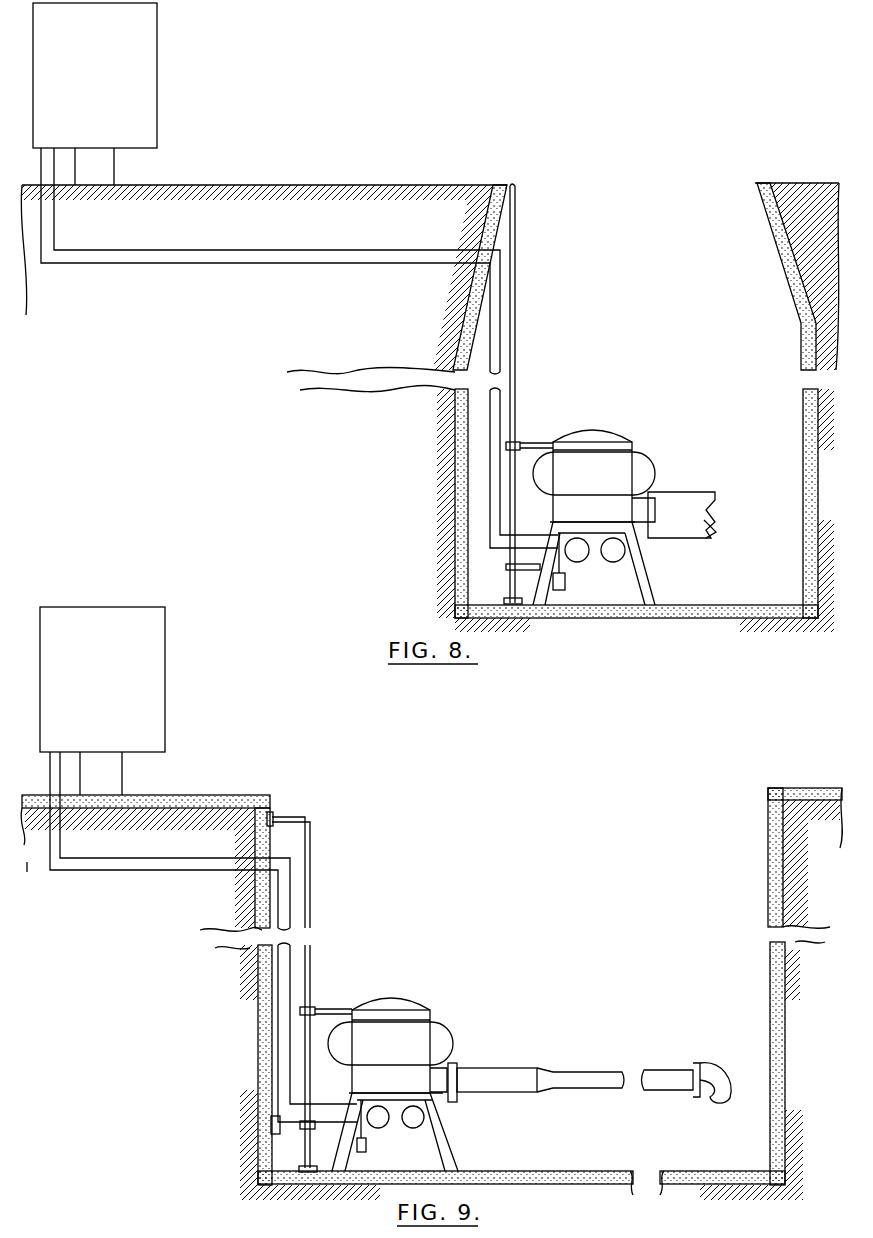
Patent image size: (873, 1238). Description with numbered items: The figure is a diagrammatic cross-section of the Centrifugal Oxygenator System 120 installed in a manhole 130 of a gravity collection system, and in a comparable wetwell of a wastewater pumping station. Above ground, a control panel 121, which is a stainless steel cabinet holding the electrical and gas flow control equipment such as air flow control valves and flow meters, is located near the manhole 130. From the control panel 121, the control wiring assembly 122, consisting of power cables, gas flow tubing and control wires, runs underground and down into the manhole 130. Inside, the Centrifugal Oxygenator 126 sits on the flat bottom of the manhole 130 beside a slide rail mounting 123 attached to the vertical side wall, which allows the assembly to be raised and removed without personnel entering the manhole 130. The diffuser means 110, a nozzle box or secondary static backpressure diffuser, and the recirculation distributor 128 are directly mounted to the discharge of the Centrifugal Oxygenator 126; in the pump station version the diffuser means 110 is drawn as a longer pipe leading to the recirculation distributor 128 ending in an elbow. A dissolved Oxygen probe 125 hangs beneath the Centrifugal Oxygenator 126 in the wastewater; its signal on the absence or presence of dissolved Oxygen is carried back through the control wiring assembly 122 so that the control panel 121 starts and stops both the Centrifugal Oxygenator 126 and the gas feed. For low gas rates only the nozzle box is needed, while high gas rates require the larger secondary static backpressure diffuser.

In FIG. 8, the diffuser means 110 is at (683, 500).
In FIG. 9, the diffuser means 110 is at (480, 1080).
In FIG. 8, the Centrifugal Oxygenator System 120 is at (318, 160).
In FIG. 9, the Centrifugal Oxygenator System 120 is at (228, 737).
In FIG. 8, the control panel 121 is at (110, 76).
In FIG. 9, the control panel 121 is at (117, 682).
In FIG. 8, the control wiring assembly 122 is at (50, 231).
In FIG. 9, the control wiring assembly 122 is at (58, 846).
In FIG. 8, the slide rail mounting 123 is at (516, 323).
In FIG. 9, the slide rail mounting 123 is at (310, 892).
In FIG. 8, the dissolved Oxygen probe 125 is at (567, 584).
In FIG. 9, the dissolved Oxygen probe 125 is at (368, 1145).
In FIG. 8, the Centrifugal Oxygenator 126 is at (590, 437).
In FIG. 9, the Centrifugal Oxygenator 126 is at (393, 1003).
In FIG. 8, the recirculation distributor 128 is at (717, 542).
In FIG. 9, the recirculation distributor 128 is at (678, 1078).
In FIG. 8, the manhole 130 is at (641, 228).